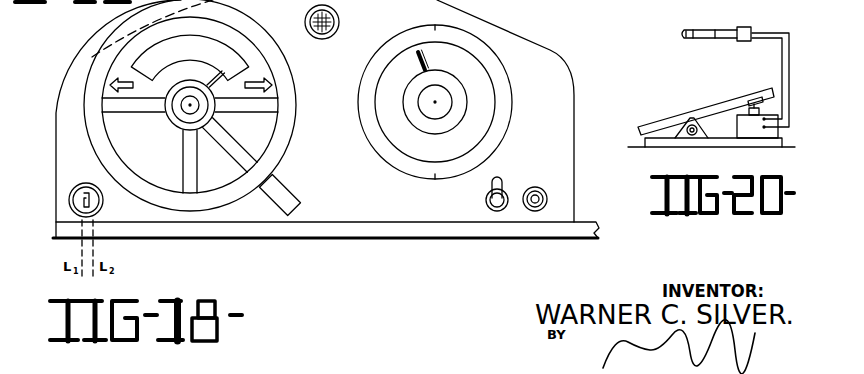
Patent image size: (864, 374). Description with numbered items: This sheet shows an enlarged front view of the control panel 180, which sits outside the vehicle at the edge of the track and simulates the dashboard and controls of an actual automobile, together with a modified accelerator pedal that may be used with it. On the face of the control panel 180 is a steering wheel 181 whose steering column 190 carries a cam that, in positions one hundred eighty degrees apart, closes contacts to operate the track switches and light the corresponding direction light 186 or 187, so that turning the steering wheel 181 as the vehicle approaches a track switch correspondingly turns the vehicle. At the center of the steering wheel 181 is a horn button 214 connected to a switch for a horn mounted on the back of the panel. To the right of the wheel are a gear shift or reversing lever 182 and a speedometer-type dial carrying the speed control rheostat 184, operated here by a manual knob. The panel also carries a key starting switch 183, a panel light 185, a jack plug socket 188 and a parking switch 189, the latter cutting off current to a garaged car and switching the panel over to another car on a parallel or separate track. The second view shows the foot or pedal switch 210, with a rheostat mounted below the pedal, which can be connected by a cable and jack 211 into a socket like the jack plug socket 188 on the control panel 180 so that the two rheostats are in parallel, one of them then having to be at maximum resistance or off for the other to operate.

In FIG. 18, the control panel 180 is at (556, 54).
In FIG. 18, the steering wheel 181 is at (274, 168).
In FIG. 18, the gear shift or reversing lever 182 is at (268, 204).
In FIG. 18, the key starting switch 183 is at (69, 200).
In FIG. 18, the speedometer indicating type speed rheostat 184 is at (457, 92).
In FIG. 18, the panel light 185 is at (334, 22).
In FIG. 18, the direction light 186 is at (116, 84).
In FIG. 18, the direction light 187 is at (269, 82).
In FIG. 18, the jack plug socket 188 is at (529, 209).
In FIG. 18, the parking switch 189 is at (487, 208).
In FIG. 18, the steering column 190 is at (184, 110).
In FIG. 18, the horn button 214 is at (186, 119).
In FIG. 20, the foot or pedal switch 210 is at (686, 113).
In FIG. 20, the cable and jack 211 is at (699, 41).